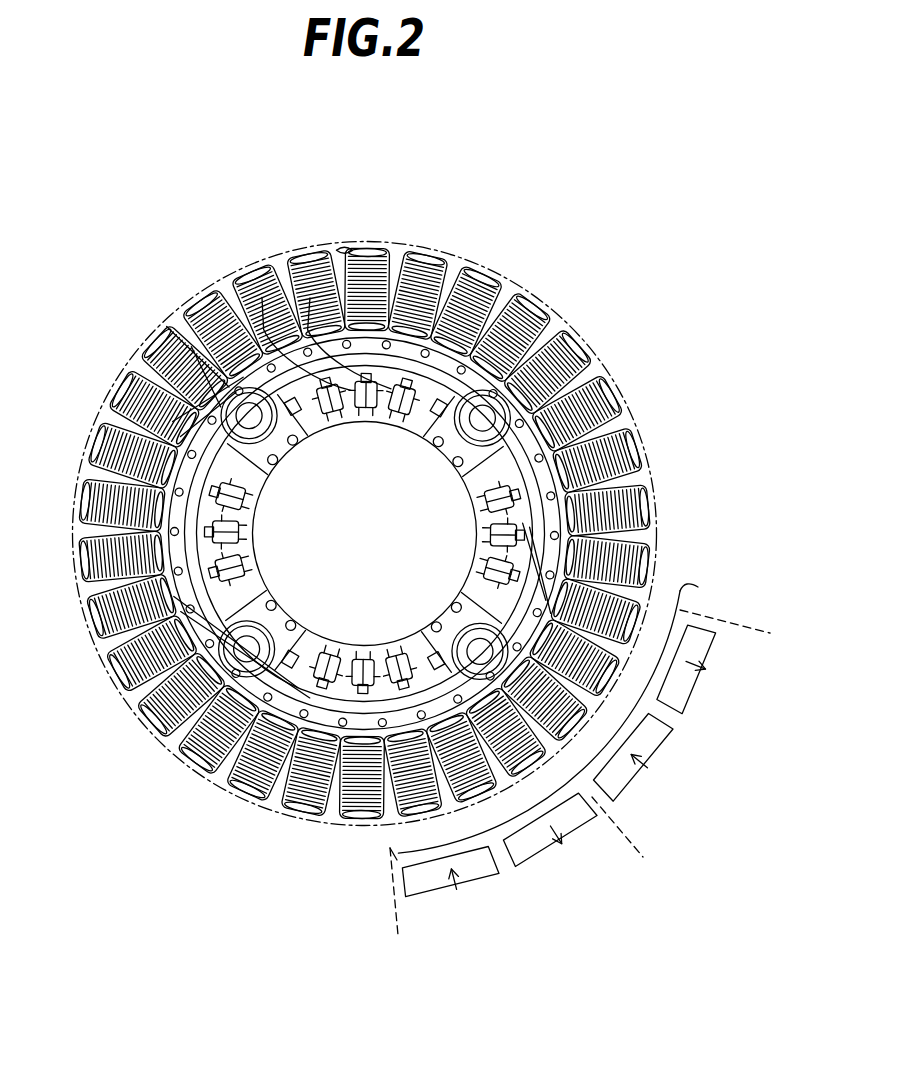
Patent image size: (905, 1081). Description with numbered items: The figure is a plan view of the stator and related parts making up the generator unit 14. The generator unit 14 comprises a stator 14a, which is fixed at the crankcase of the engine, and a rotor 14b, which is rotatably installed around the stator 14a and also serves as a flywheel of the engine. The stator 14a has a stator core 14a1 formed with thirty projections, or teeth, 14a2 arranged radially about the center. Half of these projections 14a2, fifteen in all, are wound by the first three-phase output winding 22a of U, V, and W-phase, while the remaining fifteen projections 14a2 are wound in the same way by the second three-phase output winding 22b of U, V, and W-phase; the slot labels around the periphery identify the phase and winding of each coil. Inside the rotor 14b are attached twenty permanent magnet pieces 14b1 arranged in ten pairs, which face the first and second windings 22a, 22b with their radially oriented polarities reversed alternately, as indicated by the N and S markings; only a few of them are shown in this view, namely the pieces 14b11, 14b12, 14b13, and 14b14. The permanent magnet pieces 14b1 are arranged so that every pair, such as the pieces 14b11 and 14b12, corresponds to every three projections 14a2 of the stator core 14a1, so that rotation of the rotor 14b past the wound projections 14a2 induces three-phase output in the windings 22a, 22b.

The generator unit 14 is at (126, 213).
The stator 14a is at (379, 212).
The stator core 14a1 is at (283, 447).
The projections (teeth) 14a2 is at (343, 252).
The rotor 14b is at (423, 912).
The permanent magnet pieces 14b1 is at (403, 898).
The permanent magnet piece 14b11 is at (488, 873).
The permanent magnet piece 14b12 is at (530, 857).
The permanent magnet piece 14b13 is at (660, 732).
The permanent magnet piece 14b14 is at (708, 648).
The first three-phase output winding 22a is at (308, 300).
The second three-phase output winding 22b is at (190, 455).